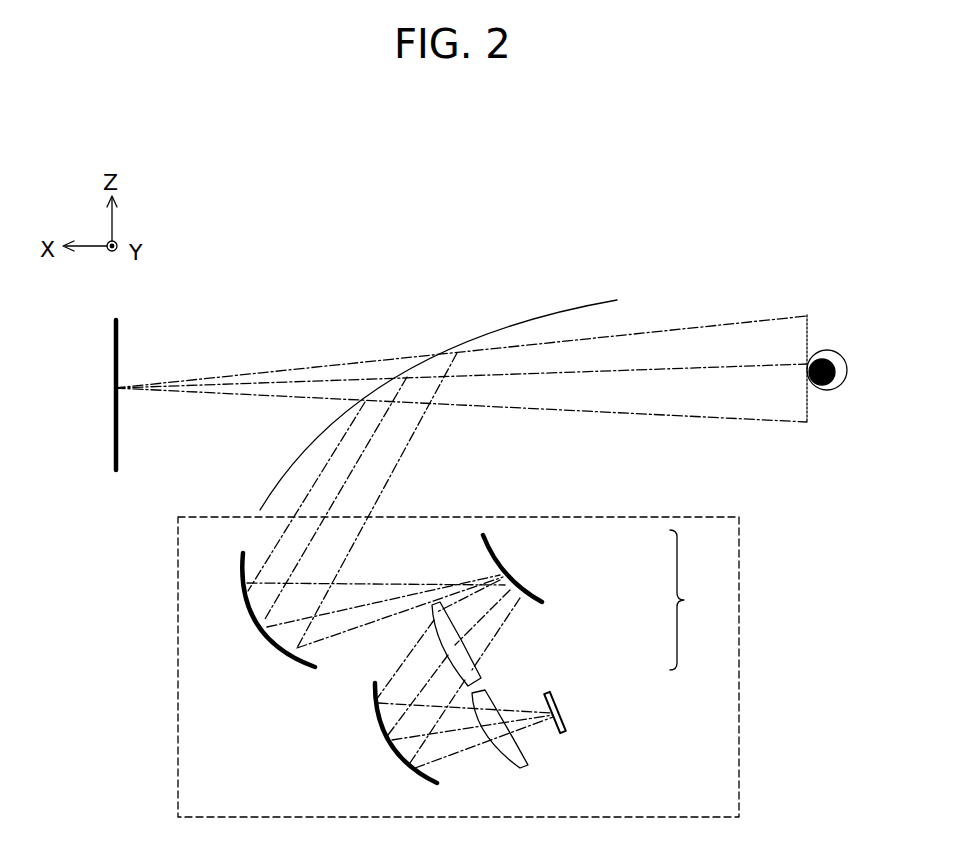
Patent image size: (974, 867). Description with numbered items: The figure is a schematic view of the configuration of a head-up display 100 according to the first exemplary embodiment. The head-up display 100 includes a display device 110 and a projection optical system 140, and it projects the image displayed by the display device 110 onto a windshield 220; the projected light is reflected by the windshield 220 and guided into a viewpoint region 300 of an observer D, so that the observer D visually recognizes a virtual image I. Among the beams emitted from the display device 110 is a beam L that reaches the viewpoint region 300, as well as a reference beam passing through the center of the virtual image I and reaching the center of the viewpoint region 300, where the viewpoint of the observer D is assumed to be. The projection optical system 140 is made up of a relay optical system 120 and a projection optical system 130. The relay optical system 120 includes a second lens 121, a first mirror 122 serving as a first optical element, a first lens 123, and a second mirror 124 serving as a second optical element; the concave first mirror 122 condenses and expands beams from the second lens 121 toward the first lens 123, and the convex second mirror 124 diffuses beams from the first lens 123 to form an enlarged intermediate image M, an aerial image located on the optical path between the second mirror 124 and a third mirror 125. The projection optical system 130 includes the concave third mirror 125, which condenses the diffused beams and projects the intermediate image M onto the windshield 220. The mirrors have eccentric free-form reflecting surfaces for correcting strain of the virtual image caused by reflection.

The head-up display 100 is at (739, 566).
The display device 110 is at (567, 723).
The relay optical system 120 is at (587, 665).
The second lens 121 is at (528, 767).
The first mirror 122 is at (383, 733).
The first lens 123 is at (482, 673).
The second mirror 124 is at (505, 548).
The third mirror 125 is at (270, 640).
The projection optical system 130 is at (586, 562).
The projection optical system 140 is at (702, 600).
The windshield 220 is at (526, 330).
The viewpoint region 300 is at (807, 328).
The observer D is at (848, 370).
The virtual image I is at (118, 338).
The beam L is at (628, 335).
The intermediate image M is at (448, 580).